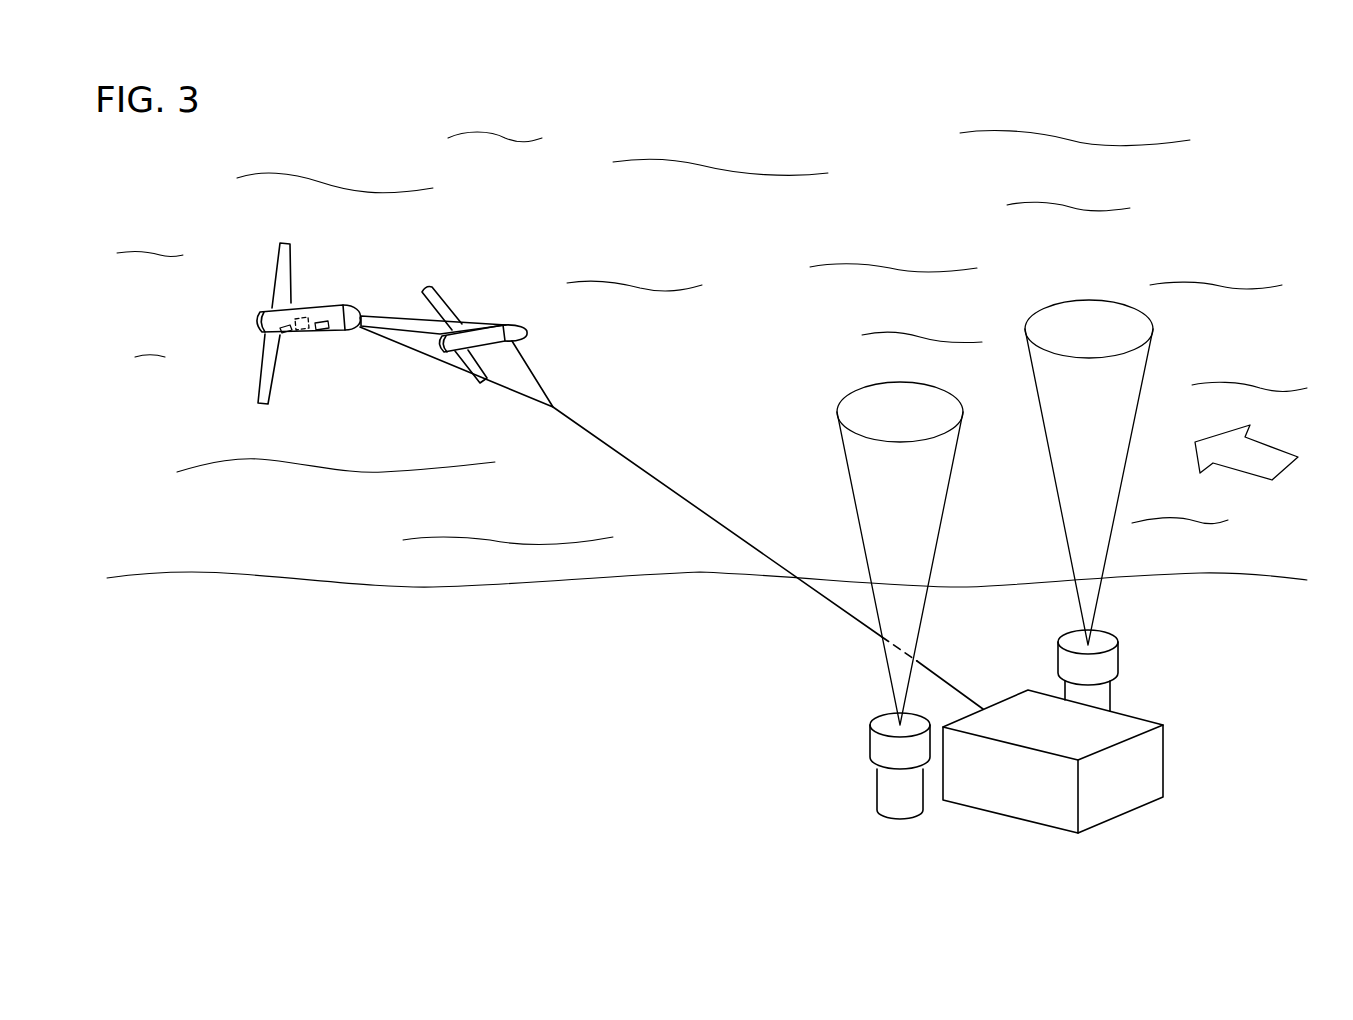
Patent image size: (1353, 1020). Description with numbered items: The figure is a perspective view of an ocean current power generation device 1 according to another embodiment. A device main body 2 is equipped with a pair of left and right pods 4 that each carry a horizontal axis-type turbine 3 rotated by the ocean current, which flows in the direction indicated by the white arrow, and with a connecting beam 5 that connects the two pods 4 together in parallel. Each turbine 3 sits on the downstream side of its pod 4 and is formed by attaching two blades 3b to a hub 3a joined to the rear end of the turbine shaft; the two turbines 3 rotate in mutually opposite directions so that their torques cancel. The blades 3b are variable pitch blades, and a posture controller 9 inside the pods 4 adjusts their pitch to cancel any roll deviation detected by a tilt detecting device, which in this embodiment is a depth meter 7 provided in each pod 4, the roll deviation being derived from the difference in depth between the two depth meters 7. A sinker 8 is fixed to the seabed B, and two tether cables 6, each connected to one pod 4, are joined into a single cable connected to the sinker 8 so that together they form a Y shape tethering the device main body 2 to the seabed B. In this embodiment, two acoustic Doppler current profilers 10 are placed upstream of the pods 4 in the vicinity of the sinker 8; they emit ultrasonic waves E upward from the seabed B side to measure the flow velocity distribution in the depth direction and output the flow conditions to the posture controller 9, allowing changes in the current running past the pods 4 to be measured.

The ocean current power generation device 1 is at (714, 364).
The device main body 2 is at (370, 311).
The horizontal axis-type turbine 3 is at (255, 312).
The hub 3a is at (255, 322).
The blade 3b is at (277, 267).
The pod 4 is at (313, 331).
The connecting beam 5 is at (397, 317).
The tether cable 6 is at (530, 367).
The depth meter 7 is at (322, 320).
The sinker 8 is at (987, 793).
The posture controller 9 is at (305, 313).
The acoustic Doppler current profiler 10 is at (868, 742).
The ultrasonic waves E is at (860, 465).
The seabed B is at (679, 700).